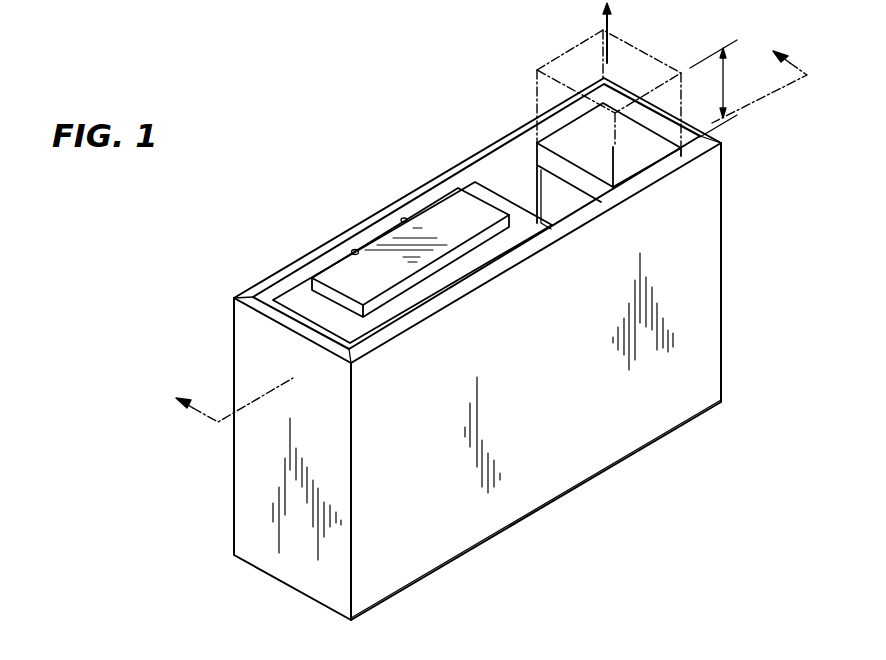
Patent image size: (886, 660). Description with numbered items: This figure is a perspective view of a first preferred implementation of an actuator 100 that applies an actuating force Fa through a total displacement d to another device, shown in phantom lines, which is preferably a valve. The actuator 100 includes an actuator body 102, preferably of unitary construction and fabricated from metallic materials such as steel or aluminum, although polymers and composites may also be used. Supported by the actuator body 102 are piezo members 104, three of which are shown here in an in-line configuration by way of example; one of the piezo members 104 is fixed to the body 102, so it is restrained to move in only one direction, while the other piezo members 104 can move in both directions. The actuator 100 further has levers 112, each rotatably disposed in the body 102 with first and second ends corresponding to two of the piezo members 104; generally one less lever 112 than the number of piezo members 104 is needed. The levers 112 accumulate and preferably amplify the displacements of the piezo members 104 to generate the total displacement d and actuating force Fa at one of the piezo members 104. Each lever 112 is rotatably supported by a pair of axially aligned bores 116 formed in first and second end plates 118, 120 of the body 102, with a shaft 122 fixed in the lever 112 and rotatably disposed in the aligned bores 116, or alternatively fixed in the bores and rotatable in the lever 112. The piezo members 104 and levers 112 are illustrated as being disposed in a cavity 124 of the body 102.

The actuator 100 is at (360, 130).
The actuator body 102 is at (470, 133).
The piezo members 104 is at (298, 295).
The levers 112 is at (368, 290).
The bores 116 is at (624, 443).
The first end plate 118 is at (722, 338).
The second end plate 120 is at (493, 138).
The shaft 122 is at (355, 249).
The cavity 124 is at (521, 191).